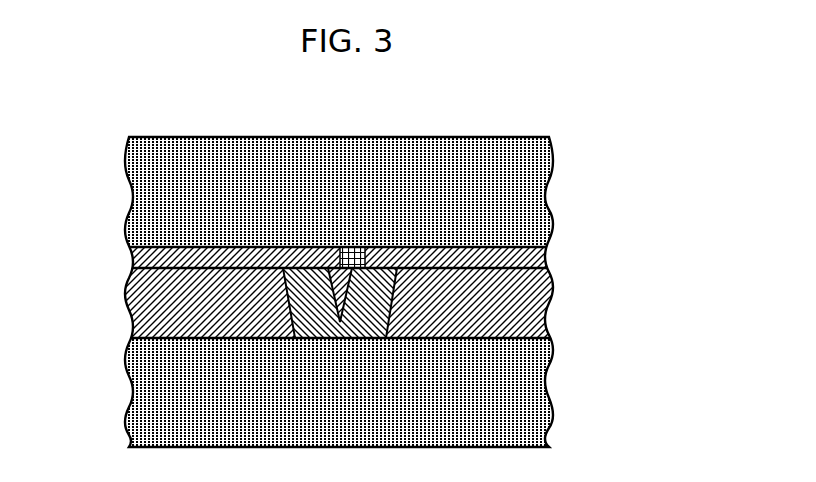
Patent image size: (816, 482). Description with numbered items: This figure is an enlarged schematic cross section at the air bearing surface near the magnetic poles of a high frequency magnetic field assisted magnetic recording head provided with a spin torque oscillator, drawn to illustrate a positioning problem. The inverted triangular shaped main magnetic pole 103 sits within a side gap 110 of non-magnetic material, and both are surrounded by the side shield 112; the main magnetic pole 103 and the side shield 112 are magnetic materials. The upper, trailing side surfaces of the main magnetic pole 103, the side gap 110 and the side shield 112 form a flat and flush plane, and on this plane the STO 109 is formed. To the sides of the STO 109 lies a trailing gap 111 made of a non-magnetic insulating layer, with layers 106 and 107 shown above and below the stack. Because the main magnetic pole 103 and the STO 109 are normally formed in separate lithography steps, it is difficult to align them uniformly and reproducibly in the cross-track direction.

The main magnetic pole 103 is at (335, 278).
The upper dielectric layer 106 is at (530, 203).
The substrate / lower layer 107 is at (530, 389).
The STO 109 is at (352, 247).
The side gap 110 is at (305, 295).
The trailing gap 111 is at (550, 258).
The side shield 112 is at (530, 308).